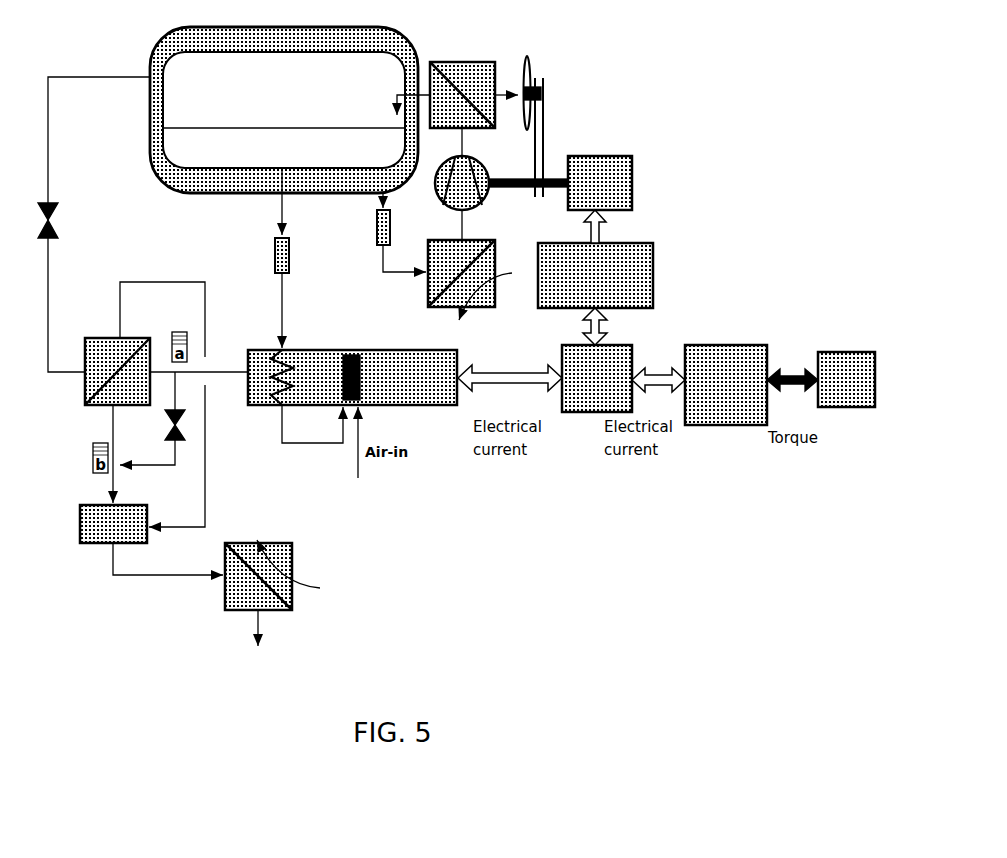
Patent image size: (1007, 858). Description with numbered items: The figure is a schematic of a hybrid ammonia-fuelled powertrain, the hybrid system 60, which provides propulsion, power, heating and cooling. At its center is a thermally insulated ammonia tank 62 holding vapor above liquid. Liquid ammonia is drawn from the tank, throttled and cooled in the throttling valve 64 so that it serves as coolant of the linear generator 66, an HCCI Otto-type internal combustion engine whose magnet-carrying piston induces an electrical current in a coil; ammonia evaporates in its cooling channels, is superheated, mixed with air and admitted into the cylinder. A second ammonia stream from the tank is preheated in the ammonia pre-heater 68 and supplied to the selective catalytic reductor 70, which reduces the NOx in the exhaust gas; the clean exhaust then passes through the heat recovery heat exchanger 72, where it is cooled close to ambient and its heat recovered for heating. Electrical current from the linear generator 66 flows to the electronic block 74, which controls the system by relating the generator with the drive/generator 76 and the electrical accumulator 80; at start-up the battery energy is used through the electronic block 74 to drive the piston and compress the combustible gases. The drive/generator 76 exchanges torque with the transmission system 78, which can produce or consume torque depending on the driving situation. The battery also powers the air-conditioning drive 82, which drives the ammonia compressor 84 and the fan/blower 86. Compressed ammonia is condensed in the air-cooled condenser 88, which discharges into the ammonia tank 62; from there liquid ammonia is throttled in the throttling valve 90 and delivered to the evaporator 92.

The hybrid system 60 is at (705, 130).
The ammonia tank 62 is at (235, 194).
The throttling valve 64 is at (275, 256).
The linear generator 66 is at (355, 344).
The ammonia pre-heater 68 is at (95, 338).
The selective catalytic reductor 70 is at (80, 502).
The heat recovery heat exchanger 72 is at (225, 553).
The electronic block 74 is at (588, 413).
The drive/generator 76 is at (736, 426).
The transmission system 78 is at (854, 408).
The electrical accumulator 80 is at (654, 283).
The air-conditioning drive 82 is at (632, 182).
The ammonia compressor 84 is at (481, 200).
The fan/blower 86 is at (544, 80).
The air-cooled condenser 88 is at (500, 98).
The throttling valve 90 is at (377, 240).
The evaporator 92 is at (428, 293).